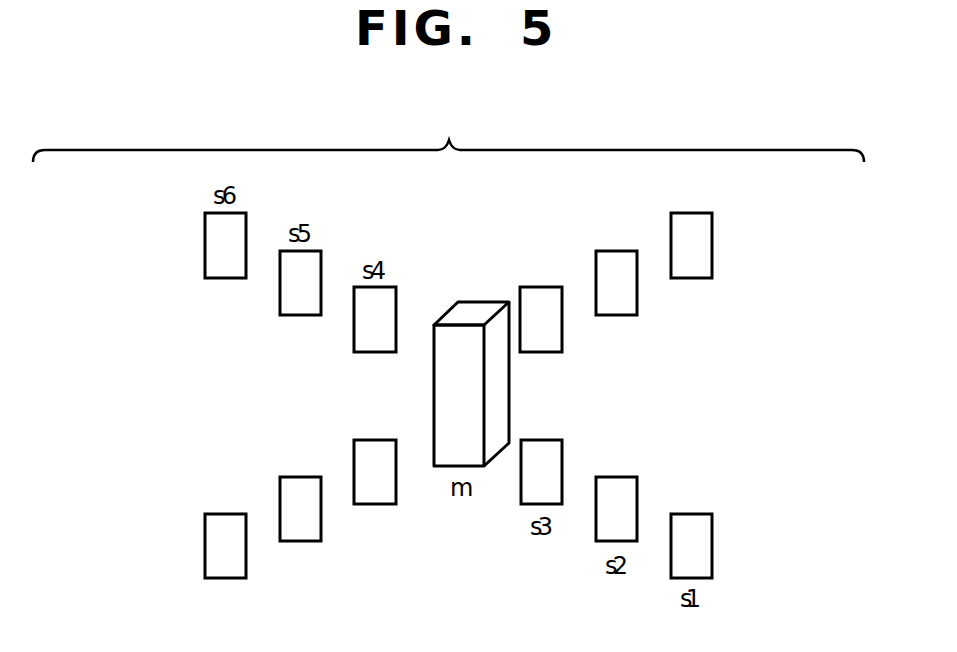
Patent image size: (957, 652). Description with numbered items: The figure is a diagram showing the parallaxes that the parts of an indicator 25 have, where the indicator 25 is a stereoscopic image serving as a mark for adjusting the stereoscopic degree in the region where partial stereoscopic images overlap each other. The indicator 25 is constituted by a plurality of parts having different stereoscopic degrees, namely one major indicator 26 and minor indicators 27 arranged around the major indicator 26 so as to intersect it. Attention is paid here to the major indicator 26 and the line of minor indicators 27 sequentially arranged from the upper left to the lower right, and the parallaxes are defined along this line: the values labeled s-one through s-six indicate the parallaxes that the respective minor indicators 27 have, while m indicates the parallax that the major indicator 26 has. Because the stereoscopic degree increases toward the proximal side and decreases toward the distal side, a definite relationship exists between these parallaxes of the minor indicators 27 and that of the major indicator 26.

The indicator 25 is at (636, 395).
The major indicator 26 is at (472, 308).
The minor indicators 27 is at (698, 552).